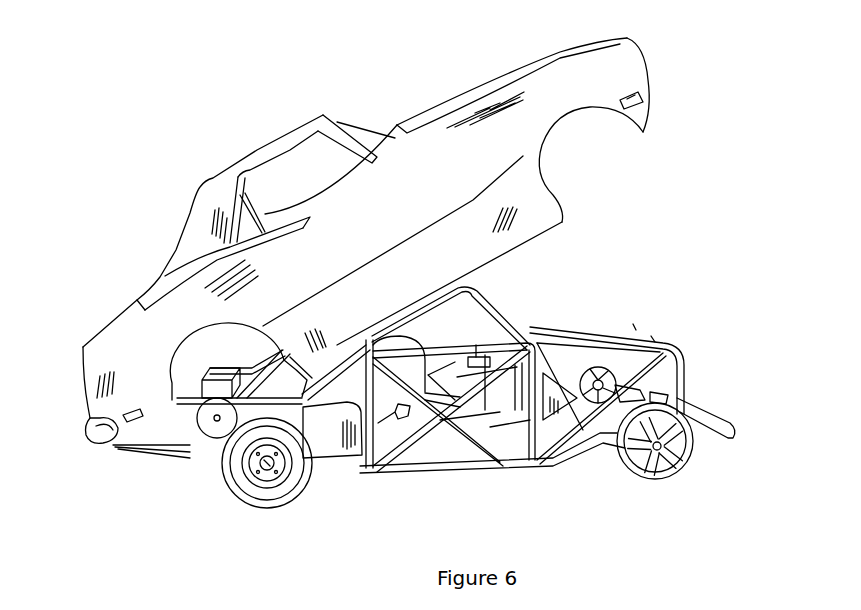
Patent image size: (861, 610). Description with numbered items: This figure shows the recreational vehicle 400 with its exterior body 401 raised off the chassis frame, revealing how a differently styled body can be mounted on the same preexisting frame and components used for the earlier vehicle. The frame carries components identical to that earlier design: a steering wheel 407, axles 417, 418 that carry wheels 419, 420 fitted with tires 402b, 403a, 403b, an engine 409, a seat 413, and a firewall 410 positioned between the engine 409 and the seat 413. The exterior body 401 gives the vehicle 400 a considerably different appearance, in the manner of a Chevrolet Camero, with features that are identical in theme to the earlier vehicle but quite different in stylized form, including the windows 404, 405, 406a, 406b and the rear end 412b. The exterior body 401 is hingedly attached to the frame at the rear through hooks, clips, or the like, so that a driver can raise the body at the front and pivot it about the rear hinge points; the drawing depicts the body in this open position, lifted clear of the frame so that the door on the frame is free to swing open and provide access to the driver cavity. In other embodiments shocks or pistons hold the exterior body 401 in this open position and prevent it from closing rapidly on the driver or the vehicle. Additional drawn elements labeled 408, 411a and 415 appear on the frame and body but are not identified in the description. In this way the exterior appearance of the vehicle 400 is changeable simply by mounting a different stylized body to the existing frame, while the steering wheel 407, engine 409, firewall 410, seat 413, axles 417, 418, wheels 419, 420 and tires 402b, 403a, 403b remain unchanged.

The vehicle 400 is at (130, 68).
The exterior body 401 is at (643, 108).
The tire 402b is at (272, 500).
The tire 403a is at (603, 370).
The tire 403b is at (663, 480).
The window 404 is at (368, 127).
The window 405 is at (176, 250).
The window 406a is at (295, 163).
The window 406b is at (240, 185).
The steering wheel 407 is at (530, 335).
The rear hoop 408 is at (681, 393).
The engine 409 is at (213, 430).
The firewall 410 is at (340, 450).
The fastener 411a is at (653, 340).
The rear end 412b is at (130, 440).
The seat 413 is at (540, 457).
The rear deck spoiler 415 is at (457, 100).
The axle 417 is at (687, 403).
The axle 418 is at (270, 468).
The wheel 419 is at (253, 473).
The wheel 420 is at (673, 463).